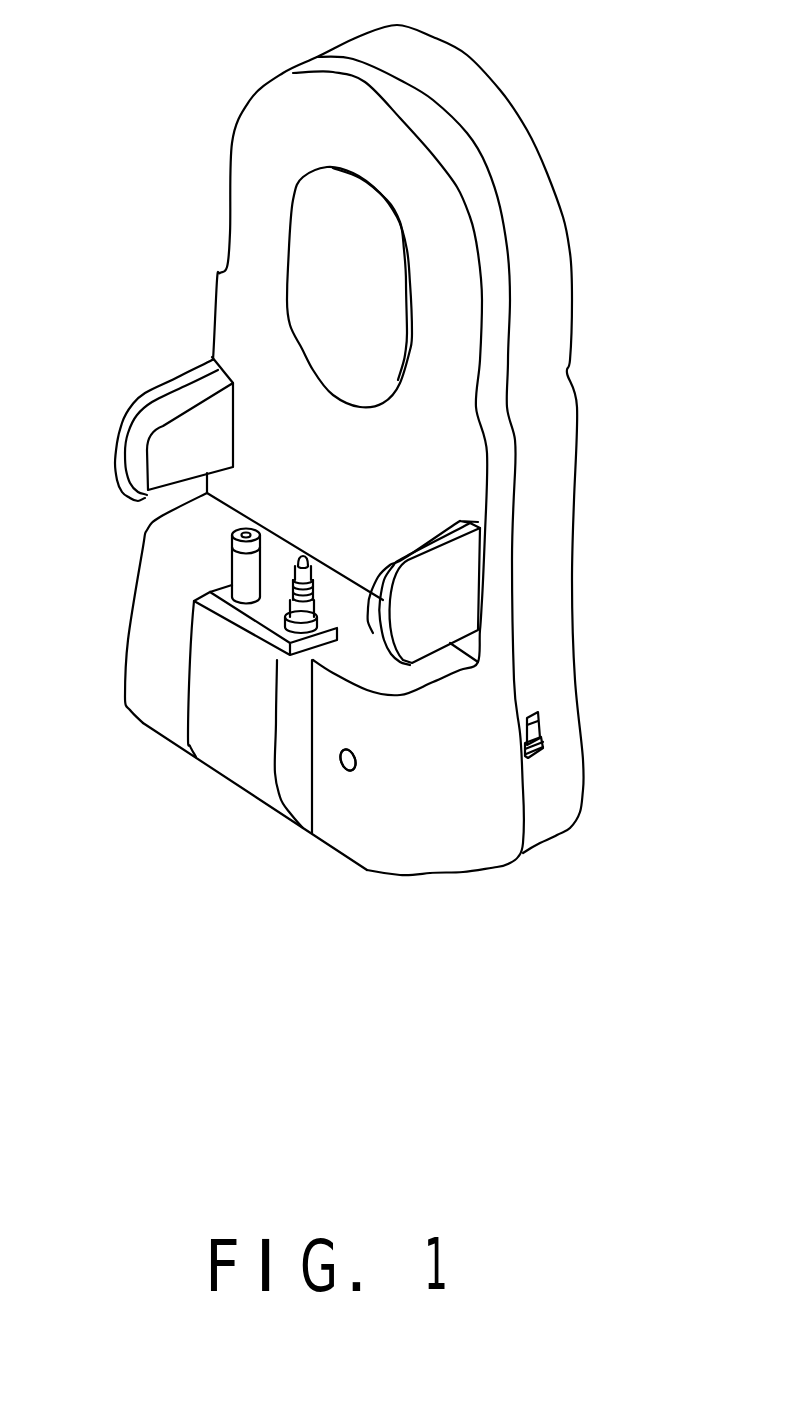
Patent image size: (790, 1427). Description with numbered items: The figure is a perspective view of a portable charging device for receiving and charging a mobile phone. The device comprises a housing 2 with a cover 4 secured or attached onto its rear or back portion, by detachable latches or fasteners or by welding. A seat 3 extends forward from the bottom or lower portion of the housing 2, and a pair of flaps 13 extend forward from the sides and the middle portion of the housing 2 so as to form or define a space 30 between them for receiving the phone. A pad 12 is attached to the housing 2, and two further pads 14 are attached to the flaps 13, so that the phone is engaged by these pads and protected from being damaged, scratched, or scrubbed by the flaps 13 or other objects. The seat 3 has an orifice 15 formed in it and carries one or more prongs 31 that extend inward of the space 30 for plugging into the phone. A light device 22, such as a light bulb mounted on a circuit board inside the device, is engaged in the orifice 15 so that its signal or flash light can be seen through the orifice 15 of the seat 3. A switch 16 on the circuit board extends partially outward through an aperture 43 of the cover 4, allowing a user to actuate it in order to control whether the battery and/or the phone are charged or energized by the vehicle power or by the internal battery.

The housing 2 is at (260, 135).
The seat 3 is at (218, 740).
The cover 4 is at (553, 535).
The pad 12 is at (330, 273).
The flaps 13 is at (460, 603).
The pads 14 is at (187, 440).
The orifice 15 is at (355, 767).
The switch 16 is at (537, 757).
The light device 22 is at (338, 771).
The space 30 is at (393, 465).
The prongs 31 is at (242, 572).
The aperture 43 is at (540, 723).